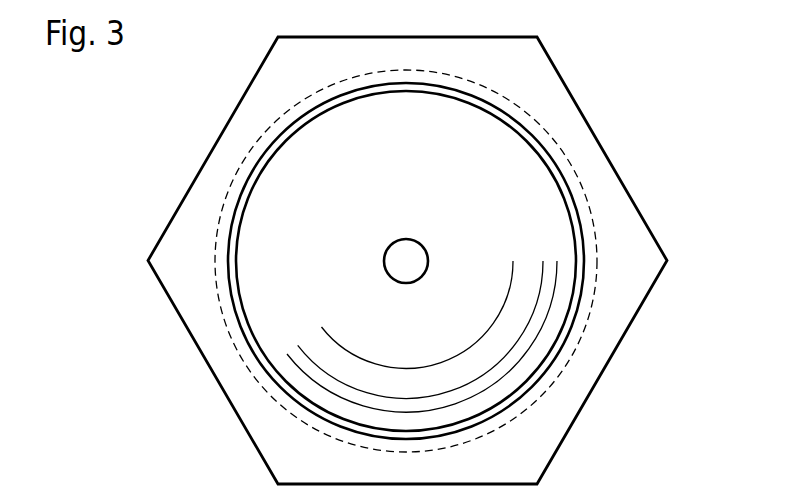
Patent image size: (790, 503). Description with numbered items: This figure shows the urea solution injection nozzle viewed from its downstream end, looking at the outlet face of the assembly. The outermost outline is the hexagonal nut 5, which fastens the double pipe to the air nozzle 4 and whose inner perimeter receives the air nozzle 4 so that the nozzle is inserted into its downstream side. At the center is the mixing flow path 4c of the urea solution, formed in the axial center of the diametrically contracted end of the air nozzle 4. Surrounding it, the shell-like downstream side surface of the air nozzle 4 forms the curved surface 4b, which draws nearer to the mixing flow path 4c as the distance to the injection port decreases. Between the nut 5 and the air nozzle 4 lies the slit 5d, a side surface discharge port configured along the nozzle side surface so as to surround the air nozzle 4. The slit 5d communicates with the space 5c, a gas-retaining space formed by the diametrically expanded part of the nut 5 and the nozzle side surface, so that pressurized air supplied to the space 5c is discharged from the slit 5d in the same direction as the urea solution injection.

The air nozzle 4 is at (504, 142).
The curved surface 4b is at (272, 185).
The mixing flow path 4c is at (396, 264).
The nut 5 is at (674, 302).
The space 5c is at (237, 347).
The slit 5d is at (240, 282).